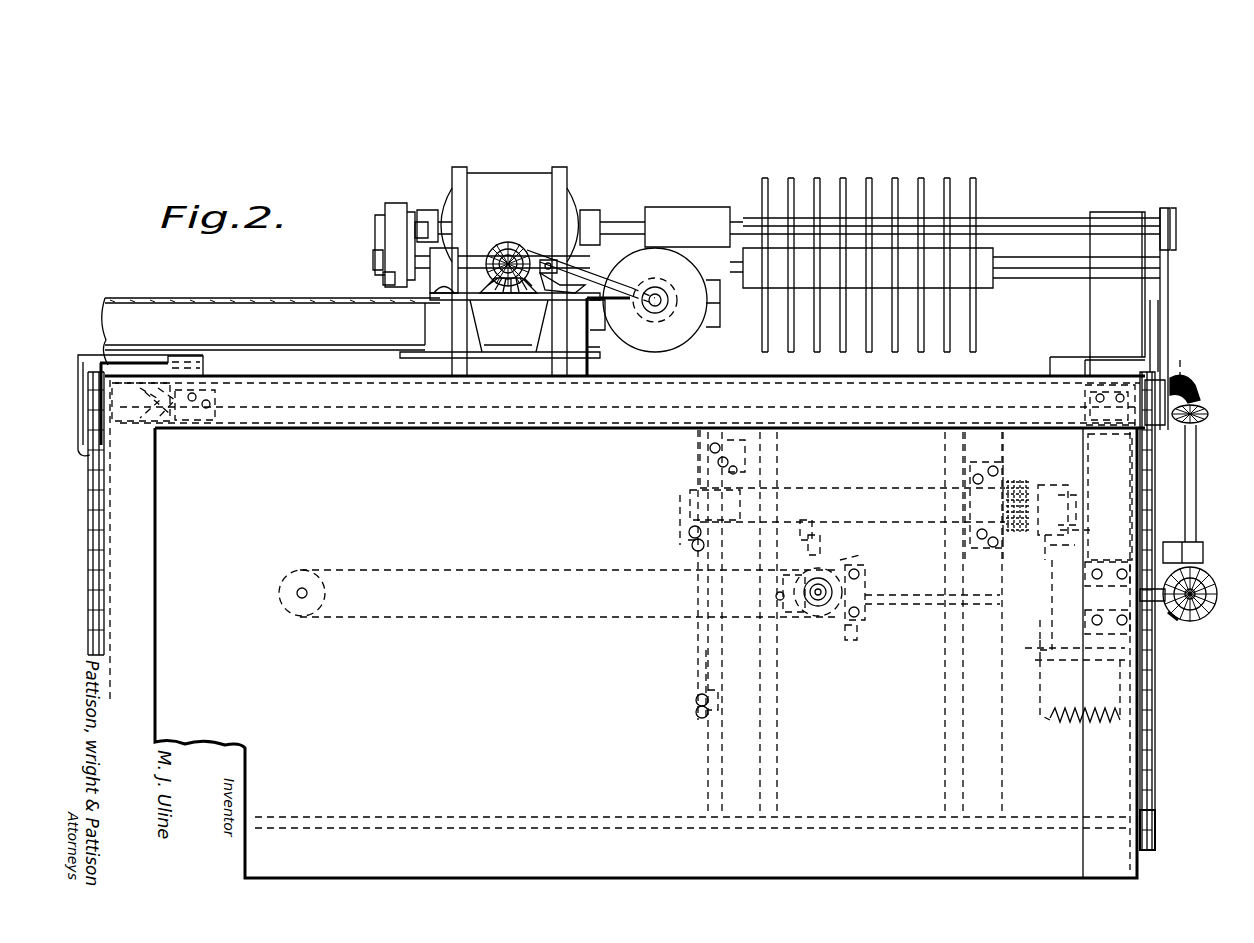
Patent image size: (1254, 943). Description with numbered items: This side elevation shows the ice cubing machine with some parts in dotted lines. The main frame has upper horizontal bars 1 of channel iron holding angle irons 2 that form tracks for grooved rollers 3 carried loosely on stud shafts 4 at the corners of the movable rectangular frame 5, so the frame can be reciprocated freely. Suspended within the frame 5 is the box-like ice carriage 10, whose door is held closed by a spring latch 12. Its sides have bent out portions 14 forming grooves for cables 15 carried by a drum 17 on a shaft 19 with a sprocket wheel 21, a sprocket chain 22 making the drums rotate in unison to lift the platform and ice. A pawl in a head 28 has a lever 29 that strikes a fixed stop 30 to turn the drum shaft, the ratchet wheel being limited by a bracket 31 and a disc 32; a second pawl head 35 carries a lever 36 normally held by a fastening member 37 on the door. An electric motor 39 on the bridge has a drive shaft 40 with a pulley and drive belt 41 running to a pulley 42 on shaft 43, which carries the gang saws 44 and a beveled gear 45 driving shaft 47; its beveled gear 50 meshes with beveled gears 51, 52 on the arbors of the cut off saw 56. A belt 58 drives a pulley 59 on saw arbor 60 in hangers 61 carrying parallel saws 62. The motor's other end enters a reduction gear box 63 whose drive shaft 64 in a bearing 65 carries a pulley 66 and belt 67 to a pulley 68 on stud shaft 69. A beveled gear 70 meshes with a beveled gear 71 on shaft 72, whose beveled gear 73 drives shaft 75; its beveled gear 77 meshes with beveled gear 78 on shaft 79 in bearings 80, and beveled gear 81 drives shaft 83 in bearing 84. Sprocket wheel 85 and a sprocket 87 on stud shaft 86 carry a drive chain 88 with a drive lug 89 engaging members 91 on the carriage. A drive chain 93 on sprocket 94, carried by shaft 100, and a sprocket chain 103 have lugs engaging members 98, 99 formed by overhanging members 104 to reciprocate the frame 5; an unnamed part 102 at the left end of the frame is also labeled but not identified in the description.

The upper horizontal bars 1 is at (625, 402).
The angle irons 2 is at (1110, 405).
The grooved rollers 3 is at (1068, 365).
The stud shafts 4 is at (1038, 376).
The rectangular frame 5 is at (220, 428).
The ice carriage 10 is at (646, 653).
The spring latch 12 is at (708, 450).
The bent out portions 14 is at (790, 770).
The cables 15 is at (778, 455).
The drum 17 is at (906, 495).
The shaft 19 is at (785, 488).
The sprocket wheel 21 is at (1062, 470).
The sprocket chain 22 is at (1022, 473).
The head 28 is at (1080, 552).
The lever 29 is at (1040, 682).
The fixed stop 30 is at (1030, 645).
The bracket 31 is at (1092, 537).
The disc 32 is at (1100, 466).
The head 35 is at (698, 485).
The lever 36 is at (698, 592).
The fastening member 37 is at (695, 698).
The electric motor 39 is at (520, 180).
The drive shaft 40 is at (385, 210).
The drive belt 41 is at (395, 228).
The pulley 42 is at (383, 278).
The shaft 43 is at (378, 252).
The gang saws 44 is at (895, 180).
The beveled gear 45 is at (545, 245).
The shaft 47 is at (505, 255).
The beveled gear 50 is at (510, 250).
The beveled gear 51 is at (470, 250).
The beveled gear 52 is at (512, 300).
The cut off saw 56 is at (503, 358).
The belt 58 is at (595, 280).
The pulley 59 is at (658, 290).
The saw arbor 60 is at (660, 302).
The hangers 61 is at (612, 320).
The saws 62 is at (680, 340).
The reduction gear box 63 is at (661, 239).
The drive shaft 64 is at (1017, 215).
The bearing 65 is at (1117, 284).
The pulley 66 is at (1175, 212).
The belt 67 is at (1170, 262).
The pulley 68 is at (1183, 362).
The stud shaft 69 is at (1109, 402).
The beveled gear 70 is at (1198, 378).
The beveled gear 71 is at (1198, 405).
The shaft 72 is at (1197, 452).
The beveled gear 73 is at (1200, 539).
The shaft 75 is at (1210, 585).
The beveled gear 77 is at (1210, 600).
The beveled gear 78 is at (1178, 618).
The shaft 79 is at (923, 595).
The bearings 80 is at (868, 575).
The beveled gear 81 is at (855, 560).
The shaft 83 is at (826, 565).
The bearing 84 is at (775, 592).
The sprocket wheel 85 is at (818, 620).
The stud shaft 86 is at (297, 592).
The sprocket 87 is at (330, 572).
The drive chain 88 is at (470, 572).
The drive lug 89 is at (836, 636).
The members 91 is at (860, 636).
The drive chain 93 is at (1156, 705).
The sprocket 94 is at (1156, 830).
The member 98 is at (1160, 345).
The member 99 is at (1140, 448).
The shaft 100 is at (536, 812).
The bracket 102 is at (108, 435).
The sprocket chain 103 is at (110, 552).
The overhanging members 104 is at (1045, 340).